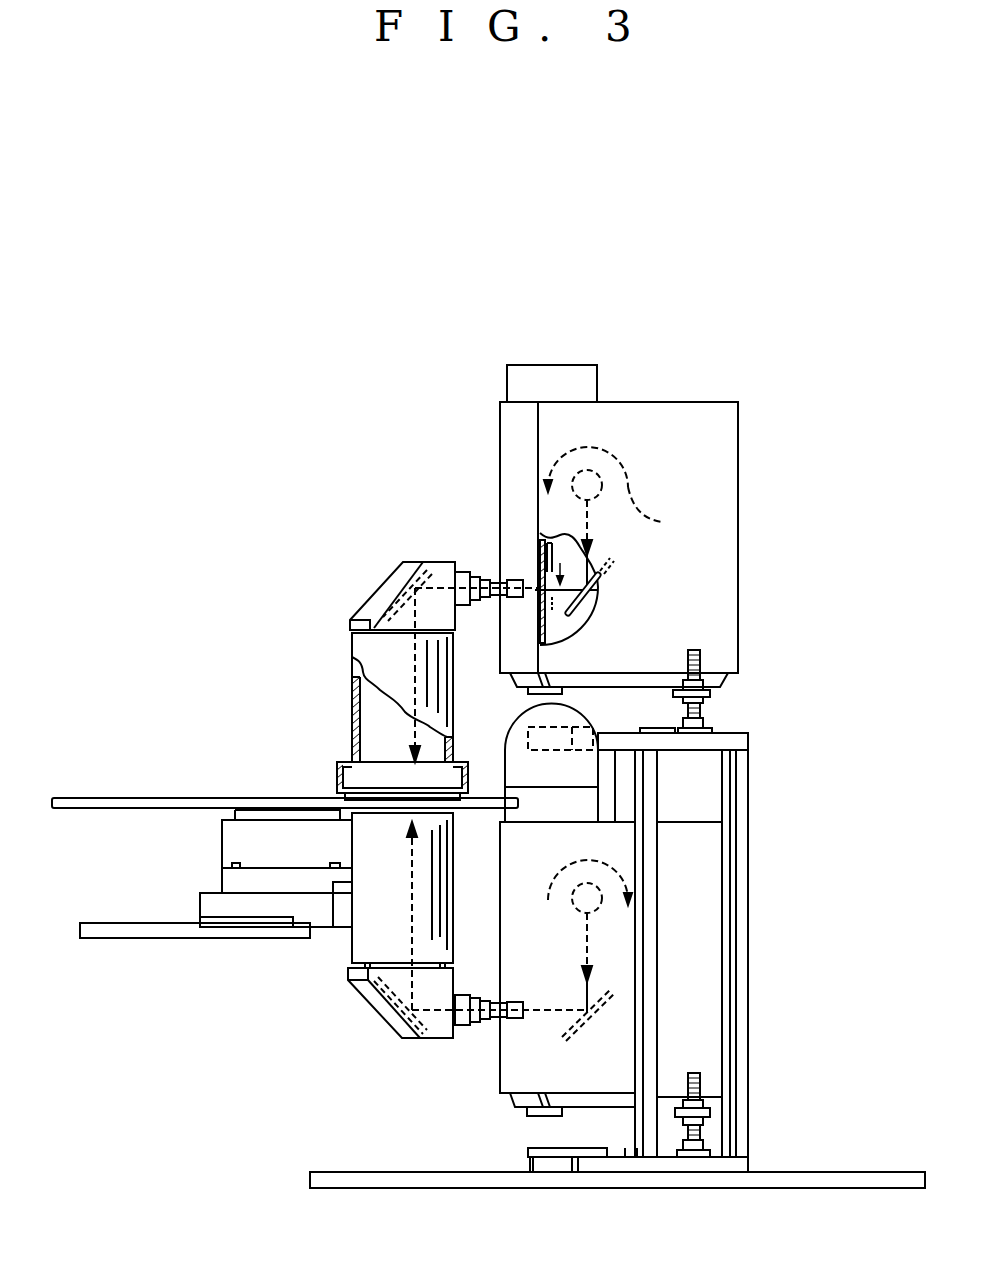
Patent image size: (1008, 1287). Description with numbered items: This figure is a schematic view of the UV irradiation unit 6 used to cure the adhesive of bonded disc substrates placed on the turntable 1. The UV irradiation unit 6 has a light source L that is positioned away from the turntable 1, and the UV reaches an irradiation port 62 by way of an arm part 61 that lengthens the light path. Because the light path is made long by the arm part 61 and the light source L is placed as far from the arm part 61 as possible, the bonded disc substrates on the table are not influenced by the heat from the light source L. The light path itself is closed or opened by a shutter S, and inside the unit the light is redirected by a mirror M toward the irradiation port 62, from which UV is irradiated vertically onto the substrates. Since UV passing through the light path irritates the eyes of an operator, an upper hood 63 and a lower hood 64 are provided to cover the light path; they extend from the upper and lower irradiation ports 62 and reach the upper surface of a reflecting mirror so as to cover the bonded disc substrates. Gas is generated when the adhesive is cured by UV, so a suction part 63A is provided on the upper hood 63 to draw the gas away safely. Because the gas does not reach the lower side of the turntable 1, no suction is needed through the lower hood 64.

The turntable 1 is at (150, 800).
The UV irradiation unit 6 is at (765, 340).
The arm part 61 is at (442, 562).
The irradiation port 62 is at (378, 627).
The upper hood 63 is at (352, 660).
The suction part 63A is at (333, 782).
The lower hood 64 is at (363, 933).
The shutter S is at (540, 557).
The light source L is at (616, 729).
The mirror M is at (587, 605).